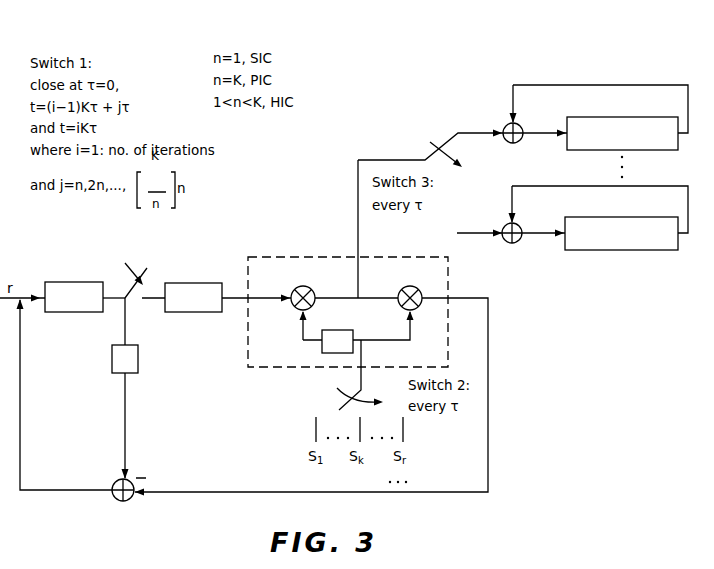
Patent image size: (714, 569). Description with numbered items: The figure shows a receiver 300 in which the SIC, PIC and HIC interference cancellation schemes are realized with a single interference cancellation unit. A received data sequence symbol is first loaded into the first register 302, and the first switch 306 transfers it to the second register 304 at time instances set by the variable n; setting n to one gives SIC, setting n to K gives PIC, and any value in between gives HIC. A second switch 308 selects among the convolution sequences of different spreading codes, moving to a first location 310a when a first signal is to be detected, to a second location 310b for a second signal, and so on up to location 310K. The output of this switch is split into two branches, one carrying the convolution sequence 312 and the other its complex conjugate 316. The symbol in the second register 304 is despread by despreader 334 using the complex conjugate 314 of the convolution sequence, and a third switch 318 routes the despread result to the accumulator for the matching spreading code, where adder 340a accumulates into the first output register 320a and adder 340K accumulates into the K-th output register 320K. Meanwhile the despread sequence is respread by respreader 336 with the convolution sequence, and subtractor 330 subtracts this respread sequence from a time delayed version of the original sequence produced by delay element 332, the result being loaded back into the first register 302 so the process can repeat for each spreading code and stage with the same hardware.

The receiver/detector system 300 is at (567, 71).
The register 1 302 is at (78, 314).
The register 2 304 is at (200, 314).
The switch 1 306 is at (134, 265).
The second switch 308 is at (337, 397).
The first location 310a is at (309, 458).
The second location 310b is at (354, 458).
The convolution sequence location 310K is at (408, 458).
The convolution sequence 312 is at (410, 340).
The complex conjugate 314 is at (322, 350).
The complex conjugate branch 316 is at (301, 337).
The third switch 318 is at (441, 142).
The output register 1 320a is at (610, 117).
The output register K 320K is at (610, 217).
The subtractor 330 is at (114, 497).
The time delay 332 is at (112, 358).
The despreader 334 is at (306, 287).
The respreader 336 is at (409, 287).
The adder 340a is at (519, 124).
The adder 340K is at (518, 243).